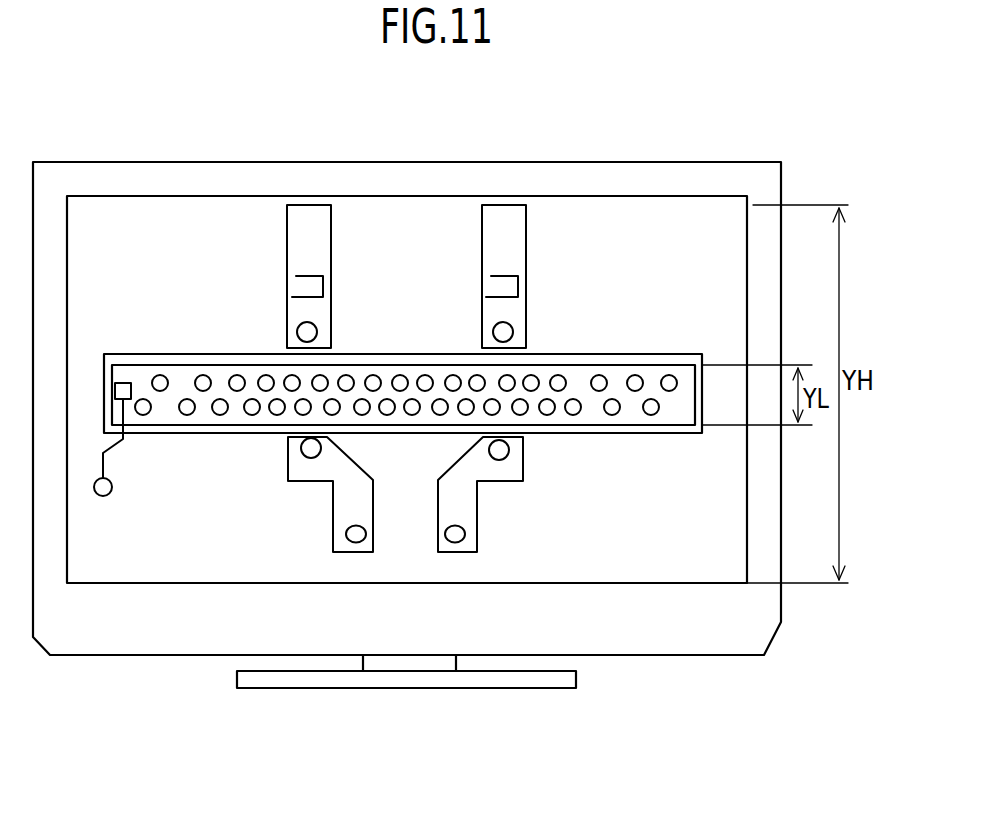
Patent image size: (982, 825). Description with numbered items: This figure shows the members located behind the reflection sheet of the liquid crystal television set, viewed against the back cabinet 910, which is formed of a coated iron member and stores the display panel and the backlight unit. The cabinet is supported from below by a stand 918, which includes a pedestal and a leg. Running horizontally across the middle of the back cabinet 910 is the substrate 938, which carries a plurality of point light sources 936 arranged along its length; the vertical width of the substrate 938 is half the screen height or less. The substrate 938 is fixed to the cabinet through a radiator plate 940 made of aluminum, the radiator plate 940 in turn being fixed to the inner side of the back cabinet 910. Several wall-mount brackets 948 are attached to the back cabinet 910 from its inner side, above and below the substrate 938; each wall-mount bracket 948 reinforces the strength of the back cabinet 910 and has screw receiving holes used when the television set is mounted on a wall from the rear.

The back cabinet 910 is at (645, 223).
The stand 918 is at (342, 680).
The point light sources 936 is at (203, 383).
The substrate 938 is at (202, 417).
The radiator plate 940 is at (242, 433).
The wall-mount bracket 948 is at (307, 223).